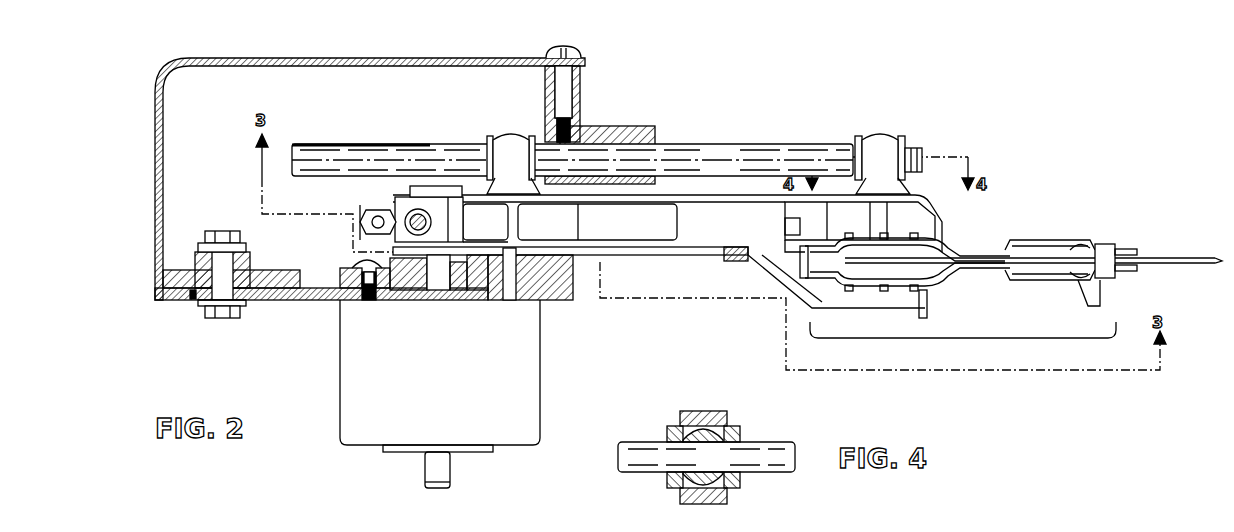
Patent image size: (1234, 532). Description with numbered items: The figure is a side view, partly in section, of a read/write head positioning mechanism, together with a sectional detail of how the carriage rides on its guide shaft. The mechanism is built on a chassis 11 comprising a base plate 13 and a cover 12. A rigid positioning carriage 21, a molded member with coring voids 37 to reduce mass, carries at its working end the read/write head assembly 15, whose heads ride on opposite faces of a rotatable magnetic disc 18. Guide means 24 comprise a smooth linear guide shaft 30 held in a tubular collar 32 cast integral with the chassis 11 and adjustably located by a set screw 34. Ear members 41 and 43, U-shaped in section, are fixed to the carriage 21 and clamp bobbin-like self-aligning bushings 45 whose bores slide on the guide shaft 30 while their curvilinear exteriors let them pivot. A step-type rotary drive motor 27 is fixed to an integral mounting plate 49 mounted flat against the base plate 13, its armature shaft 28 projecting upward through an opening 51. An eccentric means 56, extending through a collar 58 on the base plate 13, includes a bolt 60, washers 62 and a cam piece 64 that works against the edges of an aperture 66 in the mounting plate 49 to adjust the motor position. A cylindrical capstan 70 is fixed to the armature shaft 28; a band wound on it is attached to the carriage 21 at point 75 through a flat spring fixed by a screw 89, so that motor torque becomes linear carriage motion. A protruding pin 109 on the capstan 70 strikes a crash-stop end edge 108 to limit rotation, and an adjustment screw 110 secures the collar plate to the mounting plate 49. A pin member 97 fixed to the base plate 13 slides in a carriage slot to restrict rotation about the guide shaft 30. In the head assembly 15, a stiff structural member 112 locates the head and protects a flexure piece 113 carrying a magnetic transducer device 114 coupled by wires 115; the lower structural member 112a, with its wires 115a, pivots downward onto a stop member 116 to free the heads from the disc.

In FIG. 2, the cover 12 is at (381, 58).
In FIG. 2, the set screw 34 is at (583, 49).
In FIG. 2, the chassis 11 is at (545, 78).
In FIG. 2, the tubular collar 32 is at (598, 127).
In FIG. 2, the linear guide shaft 30 is at (750, 146).
In FIG. 4, the linear guide shaft 30 is at (634, 443).
In FIG. 2, the guide means 24 is at (786, 141).
In FIG. 2, the ear member 43 is at (478, 146).
In FIG. 2, the bobbin-like bushing 45 is at (512, 140).
In FIG. 4, the bobbin-like bushing 45 is at (668, 478).
In FIG. 2, the ear member 41 is at (882, 190).
In FIG. 4, the ear member 41 is at (700, 411).
In FIG. 2, the coring voids 37 is at (600, 230).
In FIG. 2, the screw 89 is at (410, 215).
In FIG. 2, the cylindrical capstan 70 is at (398, 250).
In FIG. 2, the attachment point 75 is at (362, 212).
In FIG. 2, the protruding pin 109 is at (464, 258).
In FIG. 2, the positioning carriage 21 is at (740, 232).
In FIG. 2, the stop member 116 is at (802, 300).
In FIG. 2, the read/write head assembly 15 is at (958, 300).
In FIG. 2, the rotatable magnetic disc 18 is at (1178, 260).
In FIG. 2, the stiff structural member 112 is at (1040, 237).
In FIG. 2, the structural member 112a is at (1070, 290).
In FIG. 2, the flexure piece 113 is at (1085, 243).
In FIG. 2, the wires 115 is at (1097, 248).
In FIG. 2, the magnetic transducer device 114 is at (1115, 246).
In FIG. 2, the wires 115a is at (1100, 288).
In FIG. 2, the mounting plate 49 is at (295, 300).
In FIG. 2, the base plate 13 is at (278, 270).
In FIG. 2, the collar 58 is at (198, 265).
In FIG. 2, the bolt 60 is at (230, 240).
In FIG. 2, the washers 62 is at (244, 250).
In FIG. 2, the cam piece 64 is at (210, 318).
In FIG. 2, the aperture 66 is at (195, 300).
In FIG. 2, the eccentric means 56 is at (196, 318).
In FIG. 2, the adjustment screw 110 is at (356, 268).
In FIG. 2, the opening 51 is at (398, 295).
In FIG. 2, the end edge 108 is at (415, 292).
In FIG. 2, the pin member 97 is at (513, 300).
In FIG. 2, the rotary drive motor 27 is at (540, 360).
In FIG. 2, the armature shaft 28 is at (440, 292).